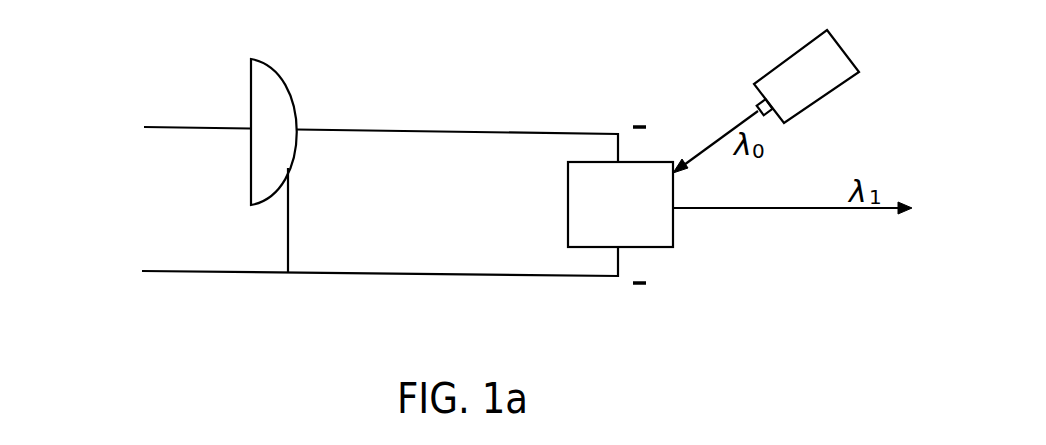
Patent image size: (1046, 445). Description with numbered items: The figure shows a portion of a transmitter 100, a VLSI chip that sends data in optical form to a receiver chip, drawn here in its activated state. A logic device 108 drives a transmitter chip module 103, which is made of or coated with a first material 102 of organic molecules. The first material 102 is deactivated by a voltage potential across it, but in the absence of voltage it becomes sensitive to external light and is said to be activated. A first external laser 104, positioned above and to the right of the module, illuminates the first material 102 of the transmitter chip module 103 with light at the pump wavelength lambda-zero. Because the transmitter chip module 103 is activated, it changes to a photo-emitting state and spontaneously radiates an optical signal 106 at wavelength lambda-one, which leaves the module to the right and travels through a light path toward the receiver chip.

The transmitter 100 is at (140, 94).
The first material 102 is at (673, 227).
The transmitter chip module 103 is at (643, 218).
The first external laser 104 is at (843, 46).
The optical signal 106 is at (785, 208).
The logic device 108 is at (287, 79).